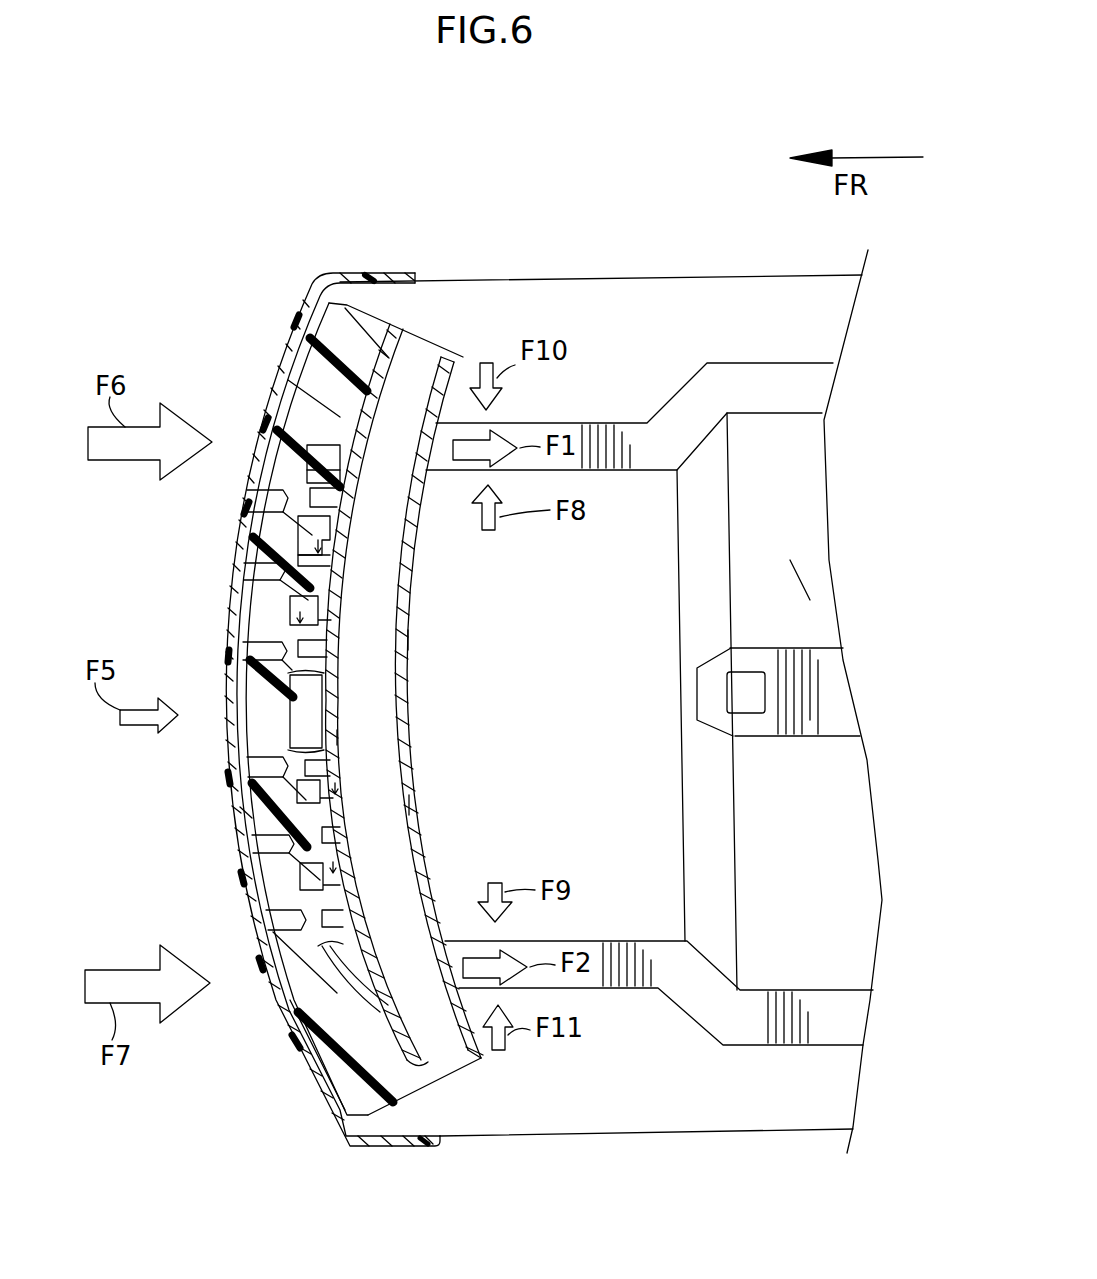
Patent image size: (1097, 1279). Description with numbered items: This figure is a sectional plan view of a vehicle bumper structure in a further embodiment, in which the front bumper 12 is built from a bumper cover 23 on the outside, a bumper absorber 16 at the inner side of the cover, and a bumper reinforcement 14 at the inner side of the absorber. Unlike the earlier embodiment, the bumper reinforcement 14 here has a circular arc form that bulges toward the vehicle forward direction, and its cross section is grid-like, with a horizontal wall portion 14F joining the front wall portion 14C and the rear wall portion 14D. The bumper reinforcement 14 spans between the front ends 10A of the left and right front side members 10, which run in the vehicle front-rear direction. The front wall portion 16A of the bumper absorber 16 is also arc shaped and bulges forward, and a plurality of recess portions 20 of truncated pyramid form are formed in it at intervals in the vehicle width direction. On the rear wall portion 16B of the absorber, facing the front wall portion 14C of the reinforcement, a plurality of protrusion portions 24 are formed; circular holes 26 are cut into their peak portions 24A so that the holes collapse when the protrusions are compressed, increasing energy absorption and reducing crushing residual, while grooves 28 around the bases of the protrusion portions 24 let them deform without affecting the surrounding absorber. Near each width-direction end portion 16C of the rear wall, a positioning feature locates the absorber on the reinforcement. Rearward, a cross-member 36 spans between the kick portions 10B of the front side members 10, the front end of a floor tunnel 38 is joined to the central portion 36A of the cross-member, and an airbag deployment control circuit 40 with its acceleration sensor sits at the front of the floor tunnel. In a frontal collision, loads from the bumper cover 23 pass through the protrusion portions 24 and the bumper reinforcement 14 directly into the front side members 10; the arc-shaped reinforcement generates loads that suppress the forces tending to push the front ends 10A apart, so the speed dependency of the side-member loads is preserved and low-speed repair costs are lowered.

The front side member 10 is at (622, 423).
The front end 10A is at (433, 385).
The kick portion 10B is at (695, 390).
The front bumper 12 is at (286, 284).
The bumper reinforcement 14 is at (414, 582).
The front wall portion 14C is at (322, 693).
The rear wall portion 14D is at (412, 642).
The horizontal wall portion 14F is at (410, 800).
The bumper absorber 16 is at (363, 306).
The front wall portion 16A is at (240, 807).
The rear wall portion 16B is at (337, 737).
The vicinity of end portion 16C is at (397, 357).
The recess portion 20 is at (270, 496).
The bumper cover 23 is at (229, 574).
The protrusion portion 24 is at (335, 460).
The peak portion 24A is at (340, 470).
The circular hole 26 is at (337, 496).
The groove 28 is at (308, 475).
The cross-member 36 is at (678, 574).
The vehicle width direction central portion 36A is at (690, 678).
The floor tunnel 38 is at (800, 648).
The airbag deployment control circuit 40 is at (745, 705).